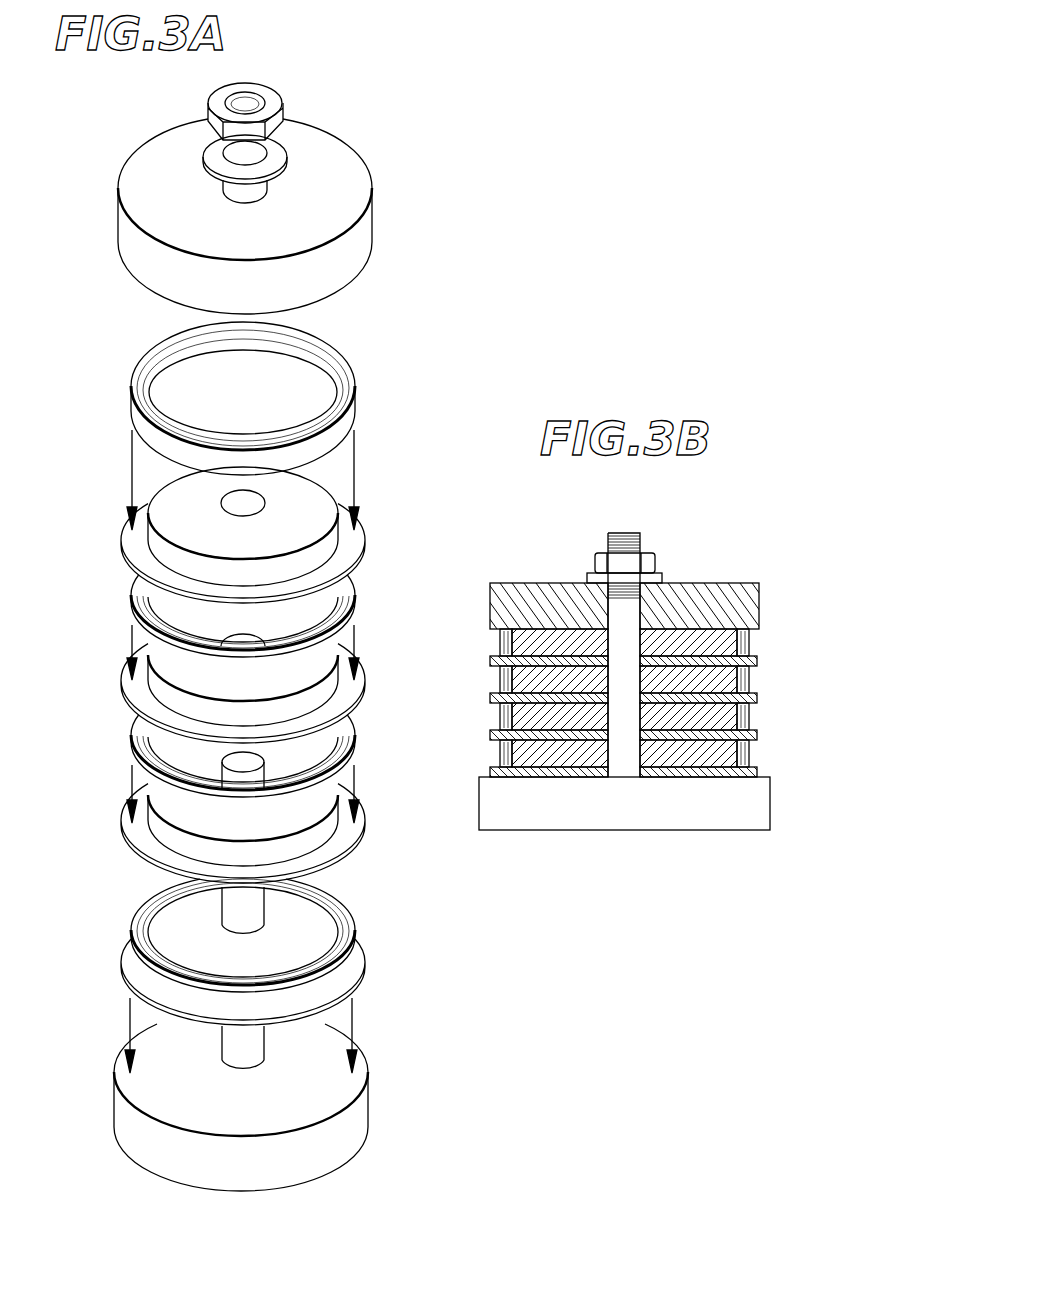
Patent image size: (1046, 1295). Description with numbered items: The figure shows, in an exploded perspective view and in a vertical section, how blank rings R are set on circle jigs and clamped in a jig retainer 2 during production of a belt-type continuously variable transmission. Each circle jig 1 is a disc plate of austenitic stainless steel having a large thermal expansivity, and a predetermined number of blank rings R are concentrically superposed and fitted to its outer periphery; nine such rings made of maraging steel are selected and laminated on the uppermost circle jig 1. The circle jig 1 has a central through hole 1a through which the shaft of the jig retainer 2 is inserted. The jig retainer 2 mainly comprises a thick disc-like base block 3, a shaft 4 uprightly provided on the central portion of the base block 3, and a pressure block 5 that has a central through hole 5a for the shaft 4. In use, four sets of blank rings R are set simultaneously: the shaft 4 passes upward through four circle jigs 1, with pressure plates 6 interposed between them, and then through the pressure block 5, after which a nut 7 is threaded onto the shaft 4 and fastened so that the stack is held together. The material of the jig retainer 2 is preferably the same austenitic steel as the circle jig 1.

In FIG. 3B, the jig retainer 2 is at (602, 545).
In FIG. 3A, the circle jig 1 is at (318, 480).
In FIG. 3B, the circle jig 1 is at (522, 647).
In FIG. 3A, the through hole 1a is at (240, 497).
In FIG. 3A, the base block 3 is at (360, 1115).
In FIG. 3B, the base block 3 is at (612, 828).
In FIG. 3A, the shaft 4 is at (258, 908).
In FIG. 3B, the shaft 4 is at (640, 537).
In FIG. 3A, the pressure block 5 is at (317, 141).
In FIG. 3B, the pressure block 5 is at (685, 587).
In FIG. 3A, the through hole 5a is at (258, 187).
In FIG. 3A, the pressure plate 6 is at (345, 541).
In FIG. 3B, the pressure plate 6 is at (767, 662).
In FIG. 3A, the nut 7 is at (283, 112).
In FIG. 3B, the nut 7 is at (595, 565).
In FIG. 3A, the blank ring R is at (348, 343).
In FIG. 3B, the blank ring R is at (756, 647).